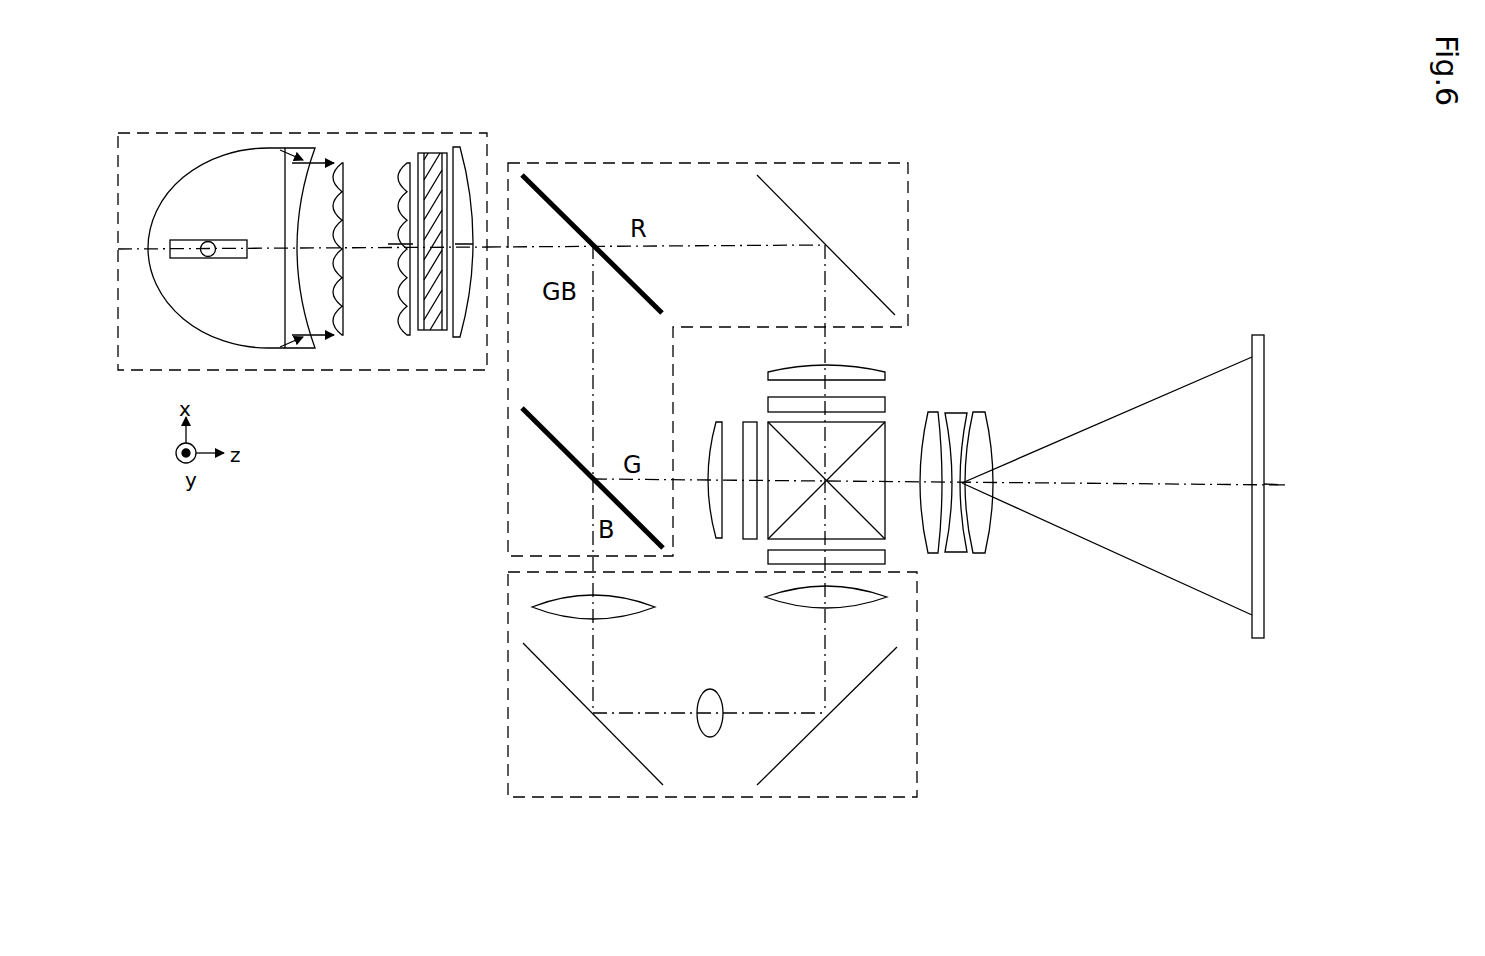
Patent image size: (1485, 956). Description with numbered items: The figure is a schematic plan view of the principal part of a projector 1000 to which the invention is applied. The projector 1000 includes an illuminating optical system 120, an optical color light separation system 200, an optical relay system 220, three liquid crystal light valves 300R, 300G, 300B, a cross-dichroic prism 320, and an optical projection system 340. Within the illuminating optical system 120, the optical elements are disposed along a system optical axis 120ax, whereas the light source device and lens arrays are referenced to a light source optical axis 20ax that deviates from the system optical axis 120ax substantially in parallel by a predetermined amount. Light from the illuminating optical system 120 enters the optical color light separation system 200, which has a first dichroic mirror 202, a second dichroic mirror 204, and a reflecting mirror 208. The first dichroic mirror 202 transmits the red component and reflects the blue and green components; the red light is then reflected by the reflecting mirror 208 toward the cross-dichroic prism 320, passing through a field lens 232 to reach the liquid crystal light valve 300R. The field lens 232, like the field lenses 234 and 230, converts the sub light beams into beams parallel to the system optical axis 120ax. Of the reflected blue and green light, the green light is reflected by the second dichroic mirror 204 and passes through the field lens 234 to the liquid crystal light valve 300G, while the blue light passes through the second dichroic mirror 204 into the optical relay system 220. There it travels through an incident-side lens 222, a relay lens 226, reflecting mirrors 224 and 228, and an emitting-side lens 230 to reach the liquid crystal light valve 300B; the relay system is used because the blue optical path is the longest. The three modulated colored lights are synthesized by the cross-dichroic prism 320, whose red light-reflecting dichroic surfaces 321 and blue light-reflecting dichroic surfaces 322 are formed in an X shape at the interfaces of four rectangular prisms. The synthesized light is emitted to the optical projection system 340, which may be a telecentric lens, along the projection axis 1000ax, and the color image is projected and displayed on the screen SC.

The projector 1000 is at (219, 48).
The illuminating optical system 120 is at (258, 131).
The light source optical axis 20ax is at (118, 249).
The optical color light separation system 200 is at (580, 161).
The first dichroic mirror 202 is at (556, 207).
The second dichroic mirror 204 is at (553, 440).
The reflecting mirror 208 is at (792, 208).
The system optical axis 120ax is at (822, 295).
The optical relay system 220 is at (507, 600).
The incident-side lens 222 is at (655, 606).
The reflecting mirror 224 is at (565, 690).
The relay lens 226 is at (705, 692).
The reflecting mirror 228 is at (855, 690).
The emitting-side lens (field lens) 230 is at (767, 600).
The field lens 232 is at (837, 364).
The field lens 234 is at (716, 422).
The liquid crystal light valve for the red light 300R is at (767, 397).
The liquid crystal light valve for the green light 300G is at (749, 421).
The liquid crystal light valve for the blue light 300B is at (767, 557).
The cross-dichroic prism 320 is at (886, 425).
The red light-reflecting dichroic surfaces 321 is at (862, 517).
The blue light-reflecting dichroic surfaces 322 is at (862, 447).
The optical projection system 340 is at (961, 412).
The screen SC is at (1257, 335).
The projection optical axis 1000ax is at (1288, 485).